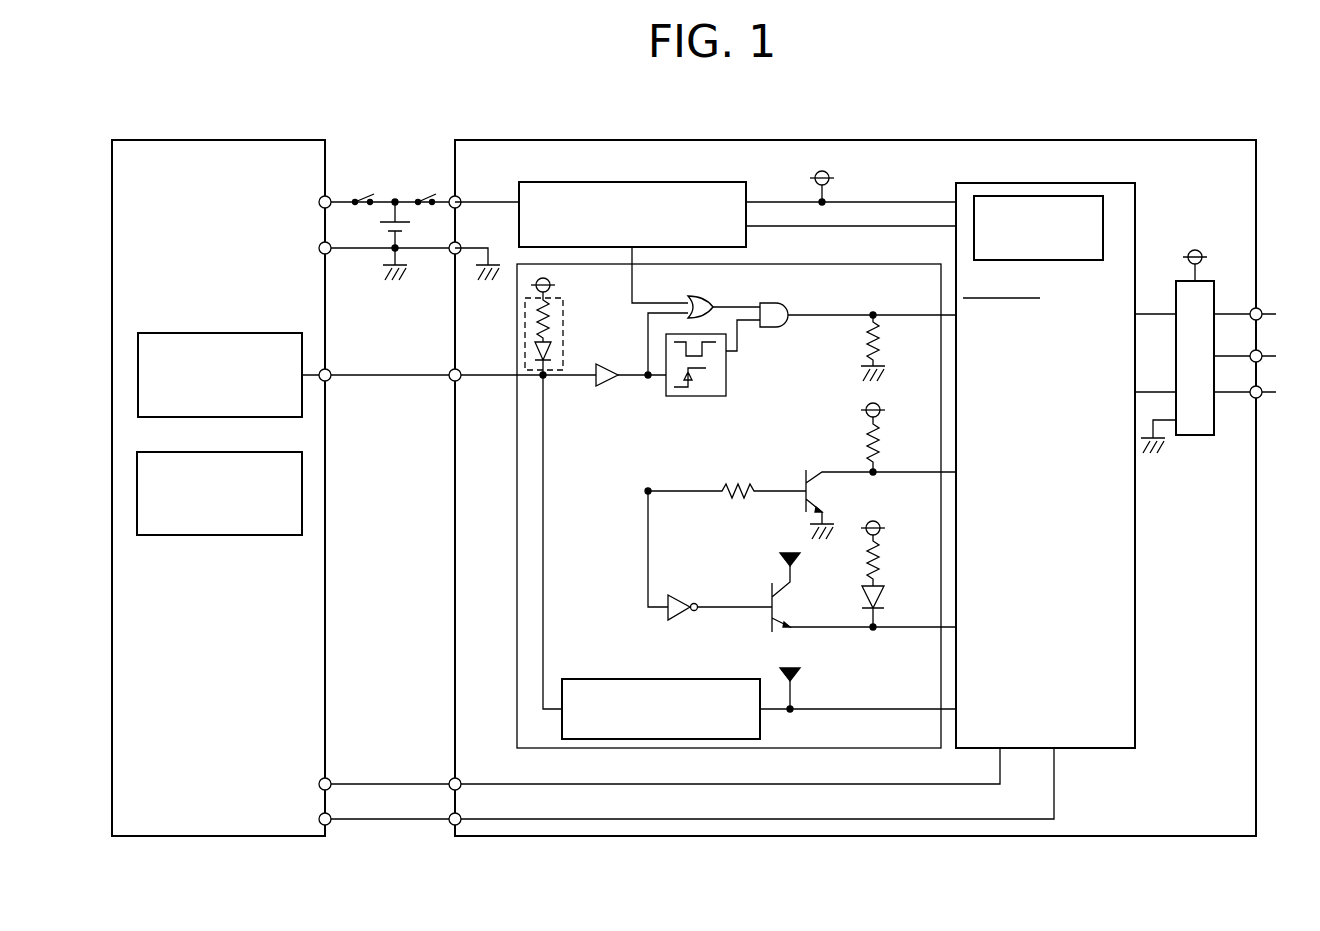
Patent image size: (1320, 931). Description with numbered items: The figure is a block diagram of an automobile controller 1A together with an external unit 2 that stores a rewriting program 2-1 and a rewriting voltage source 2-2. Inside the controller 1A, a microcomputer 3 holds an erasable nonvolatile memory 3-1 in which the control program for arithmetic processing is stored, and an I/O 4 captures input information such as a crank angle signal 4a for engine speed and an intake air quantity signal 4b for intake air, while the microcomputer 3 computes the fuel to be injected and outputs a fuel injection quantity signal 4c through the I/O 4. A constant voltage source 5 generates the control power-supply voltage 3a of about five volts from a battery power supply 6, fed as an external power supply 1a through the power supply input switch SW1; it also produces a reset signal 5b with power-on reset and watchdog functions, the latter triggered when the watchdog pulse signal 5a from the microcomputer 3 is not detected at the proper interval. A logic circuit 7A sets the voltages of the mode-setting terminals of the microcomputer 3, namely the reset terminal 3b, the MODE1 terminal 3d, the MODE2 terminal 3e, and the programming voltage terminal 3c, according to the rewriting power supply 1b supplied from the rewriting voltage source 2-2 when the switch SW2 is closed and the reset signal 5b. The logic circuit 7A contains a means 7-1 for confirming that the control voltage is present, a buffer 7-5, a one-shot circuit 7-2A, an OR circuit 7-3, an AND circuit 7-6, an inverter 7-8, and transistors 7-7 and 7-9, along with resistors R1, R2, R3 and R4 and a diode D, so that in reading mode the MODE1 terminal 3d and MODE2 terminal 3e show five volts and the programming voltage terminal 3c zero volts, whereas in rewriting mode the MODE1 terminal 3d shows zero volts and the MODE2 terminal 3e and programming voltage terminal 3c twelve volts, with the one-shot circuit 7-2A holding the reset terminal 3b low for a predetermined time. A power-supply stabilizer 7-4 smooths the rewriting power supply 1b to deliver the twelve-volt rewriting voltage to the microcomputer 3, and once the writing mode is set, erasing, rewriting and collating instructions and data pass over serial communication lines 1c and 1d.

The controller 1A is at (935, 140).
The external unit 2 is at (292, 140).
The external power supply 1a is at (395, 202).
The rewriting power supply 1b is at (412, 375).
The serial communication line 1c is at (395, 784).
The serial communication line 1d is at (375, 821).
The battery power supply 6 is at (402, 225).
The rewriting program 2-1 is at (270, 535).
The rewriting voltage source 2-2 is at (262, 333).
The constant voltage source 5 is at (573, 182).
The watchdog pulse signal 5a is at (880, 226).
The reset signal 5b is at (632, 255).
The microcomputer 3 is at (1135, 216).
The erasable nonvolatile memory 3-1 is at (1065, 260).
The control power-supply voltage VCC 3a is at (905, 202).
The reset terminal 3b is at (956, 320).
The VPP terminal 3c is at (956, 713).
The MODE1 terminal 3d is at (956, 477).
The MODE2 terminal 3e is at (956, 632).
The logic circuit 7A is at (517, 558).
The means for confirming the voltage of VCC 7-1 is at (563, 335).
The one-shot circuit 7-2A is at (726, 388).
The OR circuit 7-3 is at (704, 298).
The power-supply stabilizer 7-4 is at (632, 679).
The buffer 7-5 is at (610, 386).
The AND circuit 7-6 is at (780, 304).
The transistor 7-7 is at (803, 470).
The inverter 7-8 is at (680, 597).
The transistor 7-9 is at (770, 625).
The I/O 4 is at (1190, 435).
The crank angle signal 4a is at (1262, 310).
The intake air quantity signal 4b is at (1262, 352).
The fuel injection quantity signal 4c is at (1262, 388).
The power supply input switch SW1 is at (421, 188).
The switch SW2 is at (360, 188).
The resistor R1 is at (880, 332).
The resistor R2 is at (880, 438).
The resistor R3 is at (882, 556).
The resistor R4 is at (738, 482).
The diode D is at (884, 593).